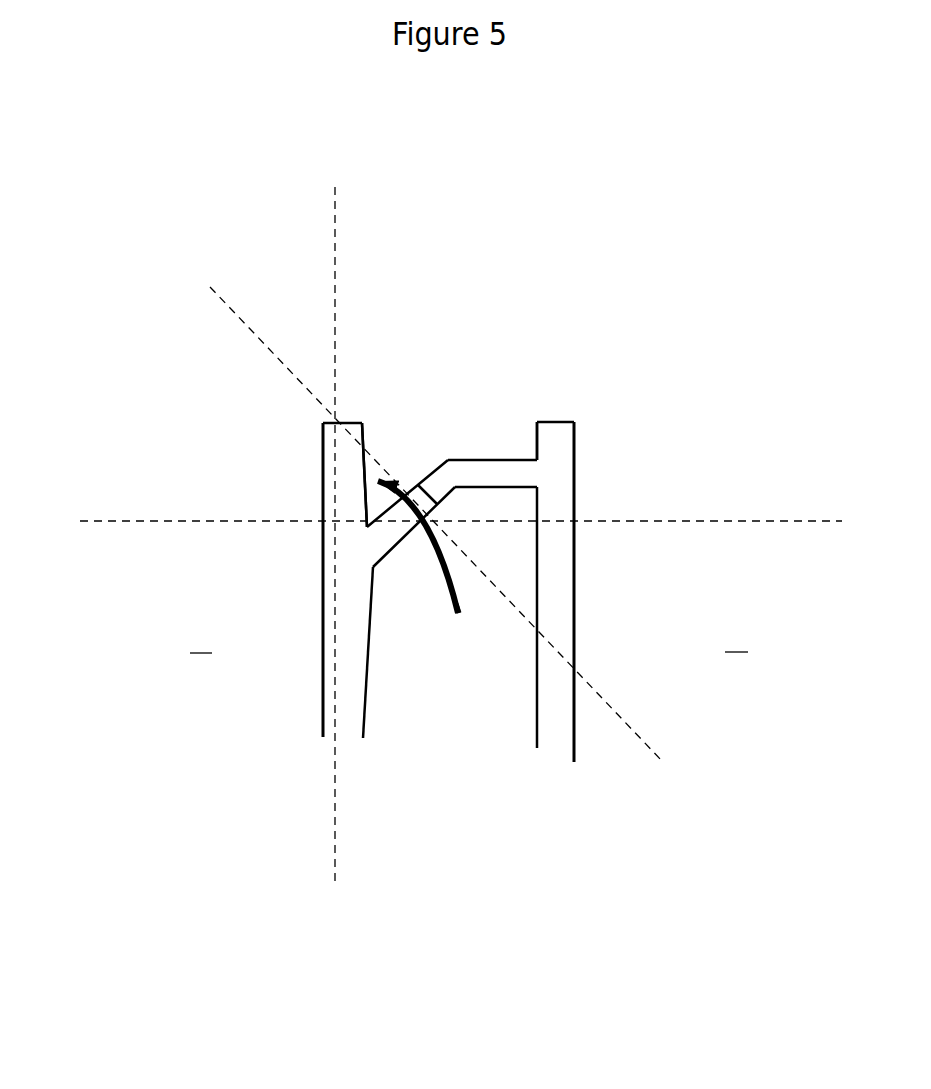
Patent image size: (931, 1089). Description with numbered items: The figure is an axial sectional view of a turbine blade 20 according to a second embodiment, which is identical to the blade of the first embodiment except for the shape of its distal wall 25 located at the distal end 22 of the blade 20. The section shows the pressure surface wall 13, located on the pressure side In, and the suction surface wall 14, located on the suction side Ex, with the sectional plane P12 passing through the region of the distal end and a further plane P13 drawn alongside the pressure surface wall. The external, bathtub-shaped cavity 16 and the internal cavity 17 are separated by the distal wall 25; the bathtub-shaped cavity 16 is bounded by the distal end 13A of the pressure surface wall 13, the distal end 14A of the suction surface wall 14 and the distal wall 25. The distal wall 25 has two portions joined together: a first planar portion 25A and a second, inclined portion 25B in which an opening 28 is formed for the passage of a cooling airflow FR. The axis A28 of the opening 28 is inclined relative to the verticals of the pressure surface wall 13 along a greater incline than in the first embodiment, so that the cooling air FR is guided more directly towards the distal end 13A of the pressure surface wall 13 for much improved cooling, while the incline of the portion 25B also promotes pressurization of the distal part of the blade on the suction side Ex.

The blade 20 is at (708, 195).
The distal end 22 is at (140, 287).
The pressure surface wall 13 is at (323, 699).
The distal end of the pressure surface wall 13A is at (323, 446).
The suction surface wall 14 is at (557, 640).
The distal end of the suction surface wall 14A is at (557, 443).
The external cavity 16 is at (458, 432).
The internal cavity 17 is at (423, 672).
The distal wall 25 is at (500, 470).
The first planar portion 25A is at (517, 470).
The second portion 25B is at (437, 487).
The opening 28 is at (413, 487).
The cooling airflow FR is at (460, 604).
The axis of the opening A28 is at (222, 298).
The plane P12 is at (125, 522).
The plane P13 is at (334, 217).